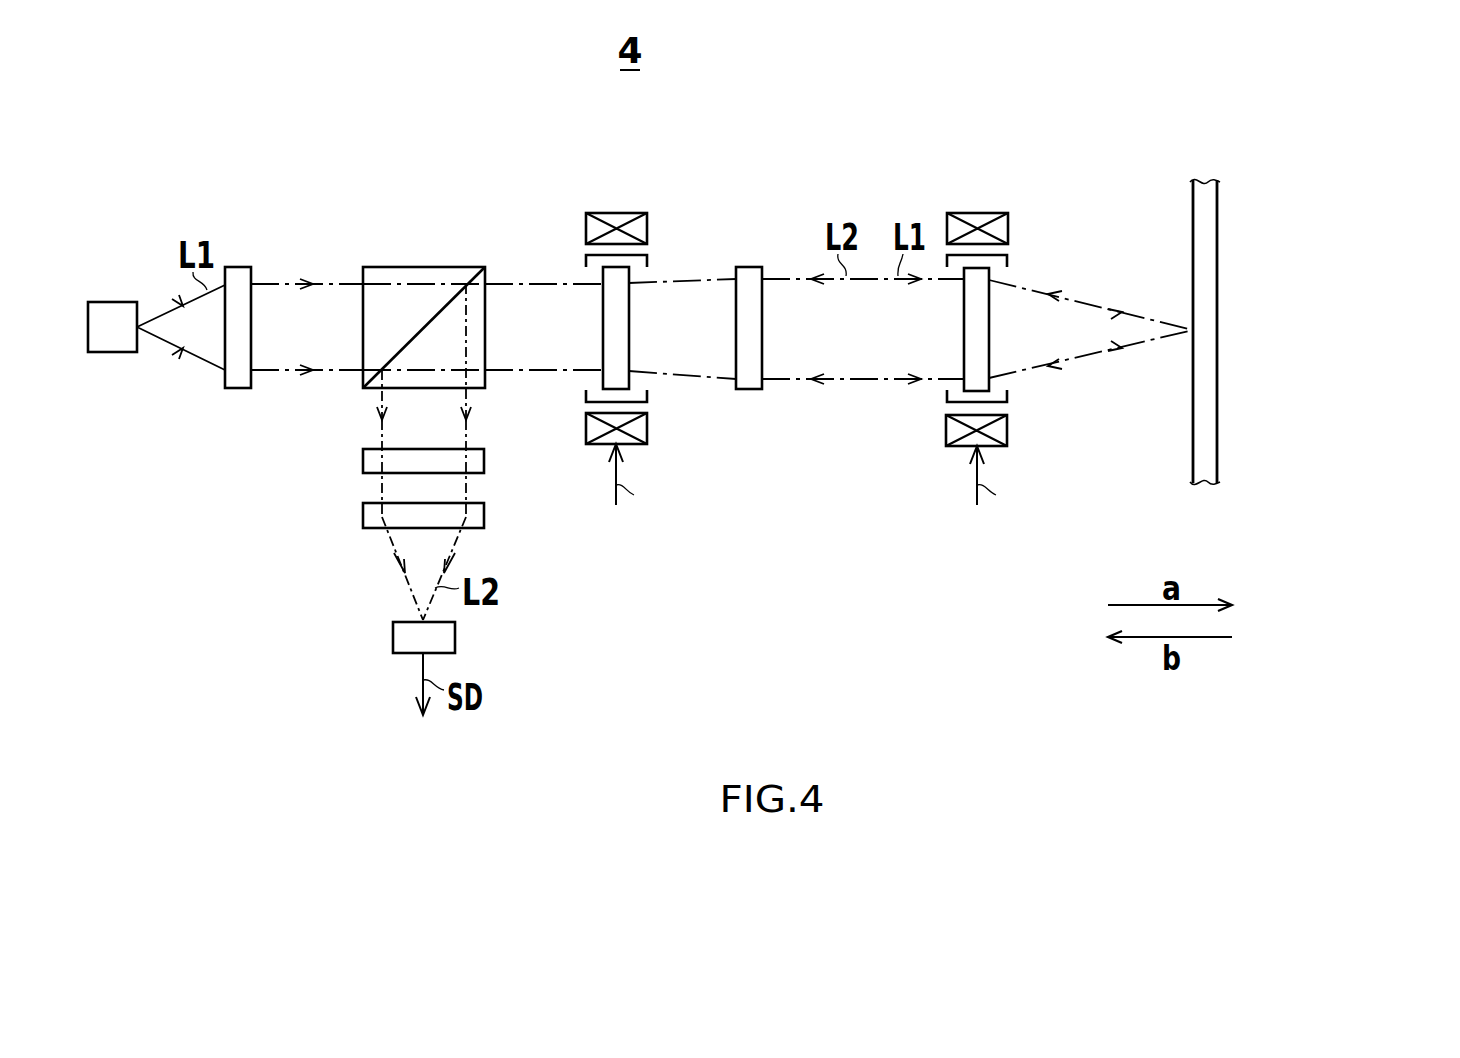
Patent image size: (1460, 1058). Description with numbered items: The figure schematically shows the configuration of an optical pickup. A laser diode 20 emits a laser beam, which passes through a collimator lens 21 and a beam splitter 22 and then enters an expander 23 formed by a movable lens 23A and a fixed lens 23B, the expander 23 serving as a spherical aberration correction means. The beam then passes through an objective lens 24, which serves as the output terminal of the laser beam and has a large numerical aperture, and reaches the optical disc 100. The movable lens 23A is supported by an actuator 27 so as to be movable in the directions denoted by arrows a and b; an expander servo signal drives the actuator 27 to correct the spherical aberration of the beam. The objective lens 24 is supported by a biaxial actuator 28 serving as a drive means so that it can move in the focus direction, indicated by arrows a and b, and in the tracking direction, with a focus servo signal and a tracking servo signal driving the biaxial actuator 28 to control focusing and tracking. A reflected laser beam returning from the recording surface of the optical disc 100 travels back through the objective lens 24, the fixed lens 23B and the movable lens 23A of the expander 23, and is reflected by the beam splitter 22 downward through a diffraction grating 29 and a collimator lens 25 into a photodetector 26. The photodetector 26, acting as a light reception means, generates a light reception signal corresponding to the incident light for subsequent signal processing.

The laser diode 20 is at (100, 302).
The collimator lens 21 is at (241, 268).
The beam splitter 22 is at (397, 268).
The expander 23 is at (699, 325).
The movable lens 23A is at (631, 280).
The fixed lens 23B is at (750, 267).
The objective lens 24 is at (1132, 319).
The collimator lens 25 is at (484, 513).
The photodetector 26 is at (455, 636).
The actuator 27 is at (647, 426).
The biaxial actuator 28 is at (1007, 431).
The diffraction grating 29 is at (484, 459).
The optical disc 100 is at (1217, 250).